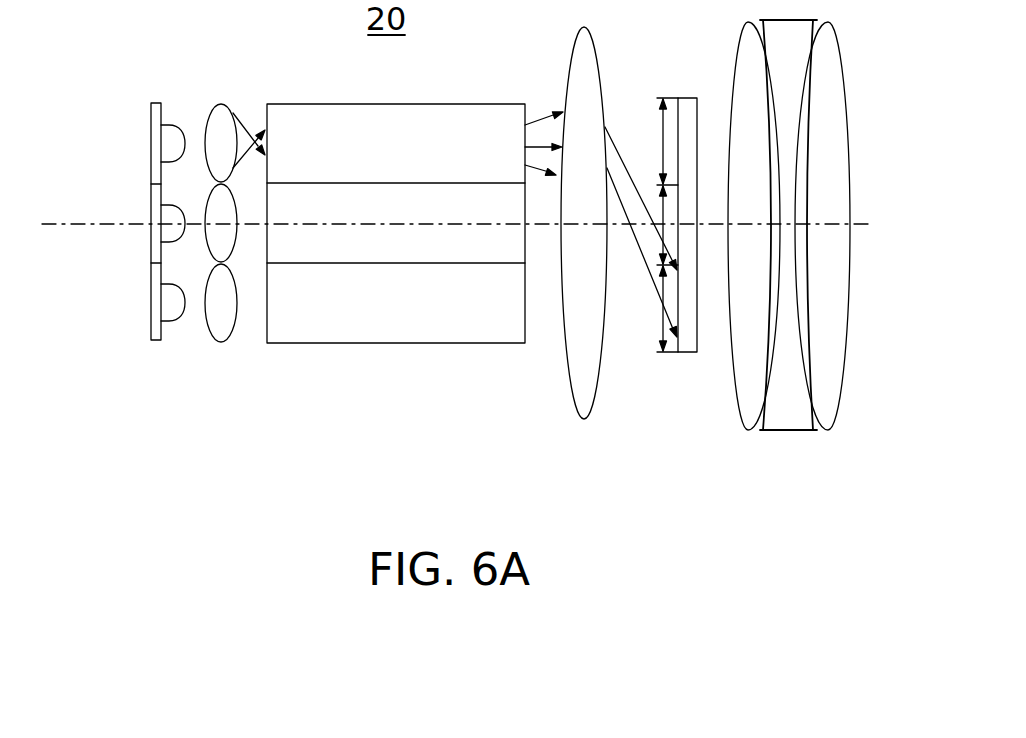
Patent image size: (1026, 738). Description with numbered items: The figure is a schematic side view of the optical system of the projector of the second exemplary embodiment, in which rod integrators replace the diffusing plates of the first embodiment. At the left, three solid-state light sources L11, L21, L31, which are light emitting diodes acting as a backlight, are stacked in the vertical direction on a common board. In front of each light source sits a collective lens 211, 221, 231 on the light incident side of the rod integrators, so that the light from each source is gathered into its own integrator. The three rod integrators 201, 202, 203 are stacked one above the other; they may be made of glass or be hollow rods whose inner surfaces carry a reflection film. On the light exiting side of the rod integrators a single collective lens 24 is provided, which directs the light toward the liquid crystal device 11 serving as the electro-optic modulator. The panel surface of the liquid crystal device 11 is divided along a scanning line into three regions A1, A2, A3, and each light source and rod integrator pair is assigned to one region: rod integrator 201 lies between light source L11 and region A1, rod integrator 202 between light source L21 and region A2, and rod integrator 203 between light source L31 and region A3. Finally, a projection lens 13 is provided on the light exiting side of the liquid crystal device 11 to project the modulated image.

The solid-state light source L11 is at (167, 143).
The solid-state light source L21 is at (167, 223).
The solid-state light source L31 is at (167, 302).
The collective lens 211 is at (222, 115).
The collective lens 221 is at (217, 238).
The collective lens 231 is at (225, 327).
The rod integrator 201 is at (425, 117).
The rod integrator 202 is at (383, 245).
The rod integrator 203 is at (458, 302).
The collective lens 24 is at (582, 420).
The liquid crystal device 11 is at (685, 355).
The projection lens 13 is at (797, 442).
The region A1 is at (664, 141).
The region A2 is at (664, 225).
The region A3 is at (664, 309).